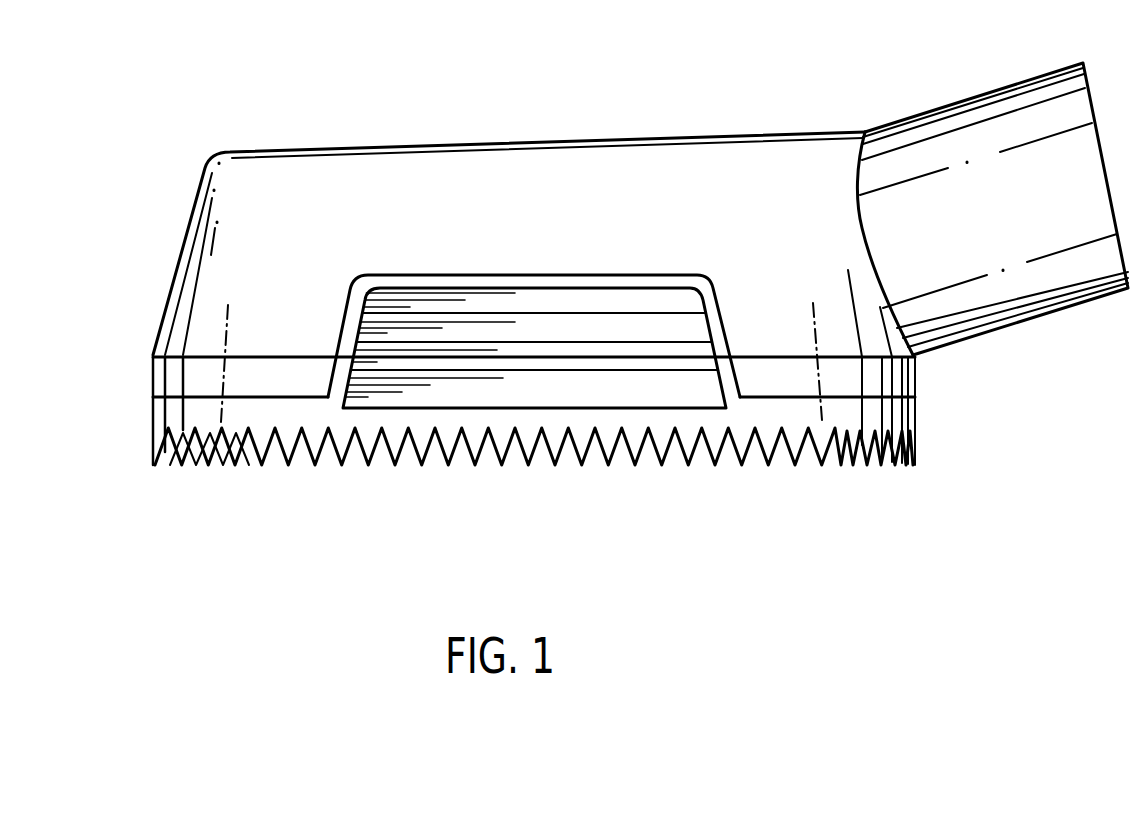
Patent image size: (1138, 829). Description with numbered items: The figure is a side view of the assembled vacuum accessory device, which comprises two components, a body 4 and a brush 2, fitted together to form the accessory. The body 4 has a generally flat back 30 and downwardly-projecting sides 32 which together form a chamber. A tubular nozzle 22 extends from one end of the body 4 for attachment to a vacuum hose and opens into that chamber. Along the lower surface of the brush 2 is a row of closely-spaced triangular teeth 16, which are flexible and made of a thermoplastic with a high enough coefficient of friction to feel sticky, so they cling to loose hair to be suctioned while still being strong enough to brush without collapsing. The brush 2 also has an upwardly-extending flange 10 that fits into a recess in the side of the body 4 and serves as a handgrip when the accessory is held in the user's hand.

The brush 2 is at (400, 510).
The body 4 is at (406, 76).
The flange 10 is at (580, 383).
The triangular teeth 16 is at (818, 455).
The tubular nozzle 22 is at (1020, 323).
The flat back 30 is at (543, 140).
The sides 32 is at (174, 267).